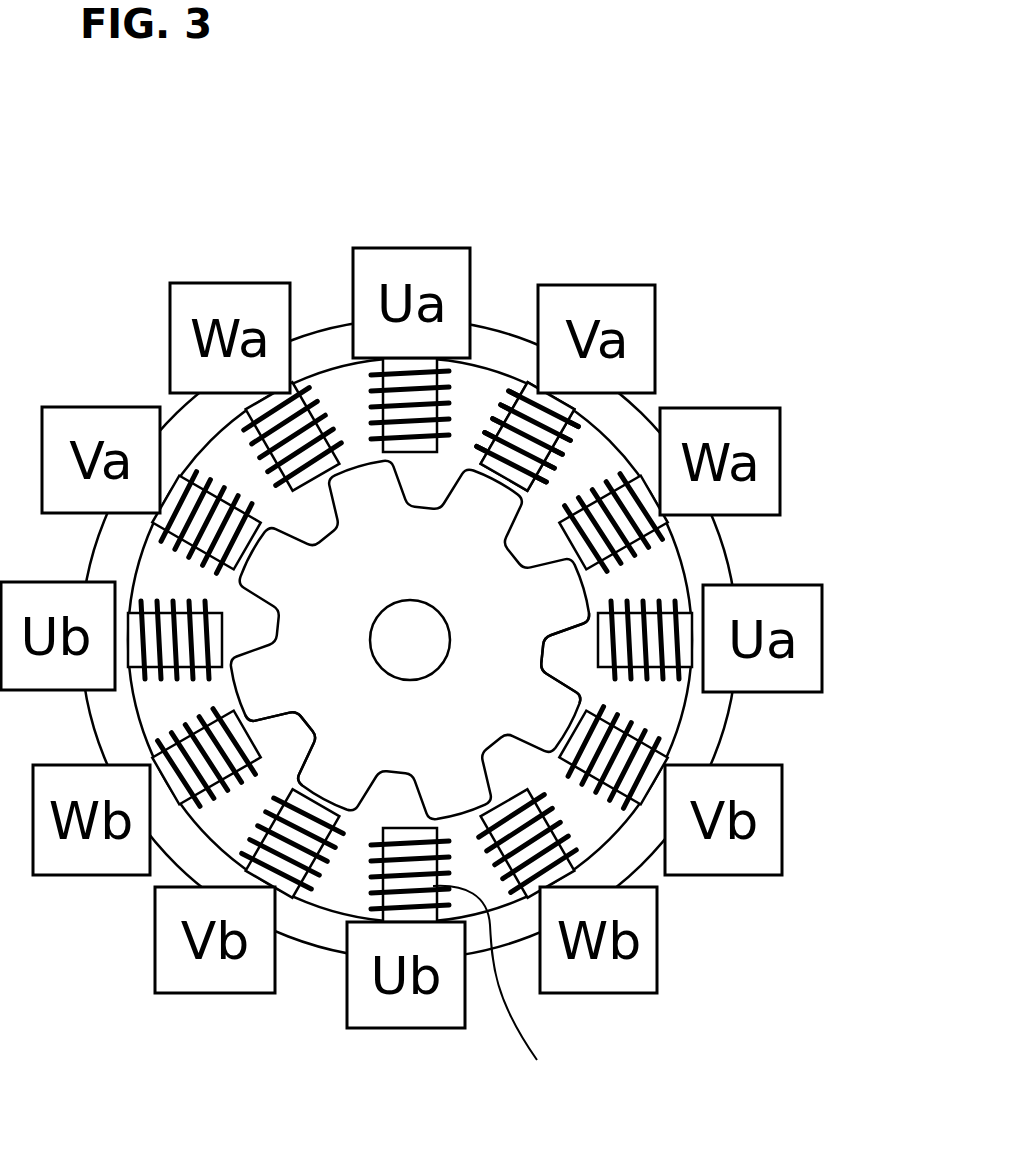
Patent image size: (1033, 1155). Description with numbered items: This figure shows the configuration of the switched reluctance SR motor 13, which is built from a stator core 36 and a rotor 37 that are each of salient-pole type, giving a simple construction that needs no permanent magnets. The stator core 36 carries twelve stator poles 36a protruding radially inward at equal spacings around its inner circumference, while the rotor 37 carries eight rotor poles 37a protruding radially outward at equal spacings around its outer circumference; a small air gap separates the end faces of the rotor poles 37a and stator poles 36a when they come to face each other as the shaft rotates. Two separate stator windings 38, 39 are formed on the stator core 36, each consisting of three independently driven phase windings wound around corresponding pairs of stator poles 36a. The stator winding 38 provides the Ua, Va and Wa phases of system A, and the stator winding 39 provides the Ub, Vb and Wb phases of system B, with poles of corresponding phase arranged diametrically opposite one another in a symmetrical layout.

The SR motor 13 is at (492, 240).
The stator core 36 is at (313, 340).
The stator poles 36a is at (433, 468).
The rotor 37 is at (457, 555).
The rotor poles 37a is at (573, 597).
The stator winding 38 is at (509, 410).
The stator winding 39 is at (507, 993).